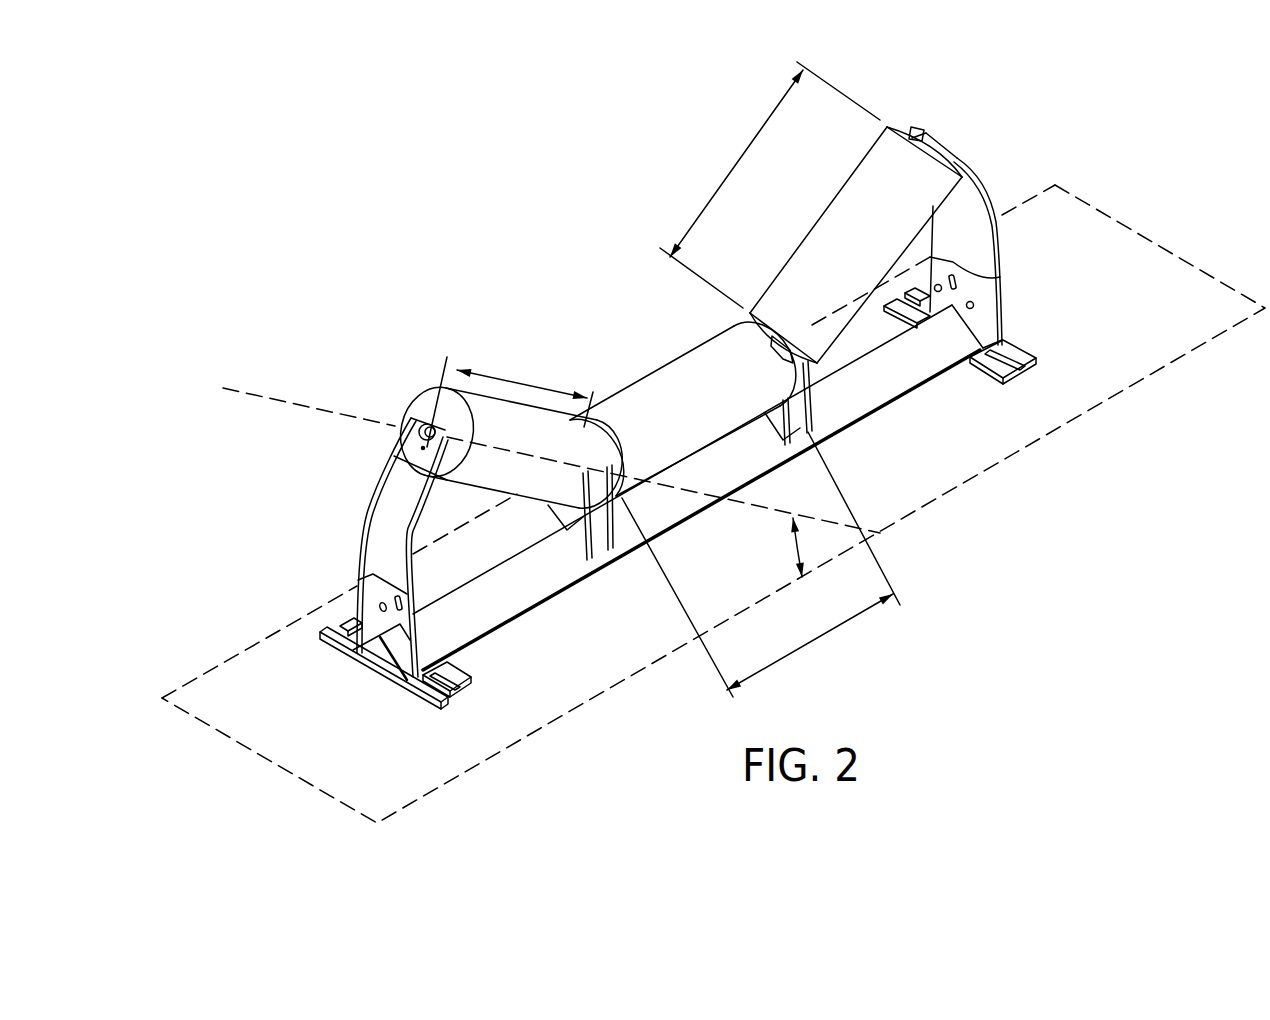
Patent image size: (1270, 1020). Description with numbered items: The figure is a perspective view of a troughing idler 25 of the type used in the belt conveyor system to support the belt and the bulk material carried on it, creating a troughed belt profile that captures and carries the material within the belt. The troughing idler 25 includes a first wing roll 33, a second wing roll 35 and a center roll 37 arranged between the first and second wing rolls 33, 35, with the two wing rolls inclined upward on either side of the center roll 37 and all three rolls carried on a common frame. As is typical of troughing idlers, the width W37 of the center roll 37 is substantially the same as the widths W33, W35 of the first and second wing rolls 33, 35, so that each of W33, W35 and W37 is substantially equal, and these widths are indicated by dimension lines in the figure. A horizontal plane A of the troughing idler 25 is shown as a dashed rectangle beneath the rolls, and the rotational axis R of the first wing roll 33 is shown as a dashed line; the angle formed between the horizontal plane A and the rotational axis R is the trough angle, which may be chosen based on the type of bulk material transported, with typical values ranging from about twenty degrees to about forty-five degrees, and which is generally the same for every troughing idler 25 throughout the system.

The troughing idler 25 is at (478, 188).
The first wing roll 33 is at (498, 480).
The second wing roll 35 is at (867, 175).
The center roll 37 is at (668, 377).
The width of the first wing roll W33 is at (518, 384).
The width of the second wing roll W35 is at (767, 122).
The width of the center roll W37 is at (808, 640).
The rotational axis R is at (260, 393).
The horizontal plane A is at (430, 757).